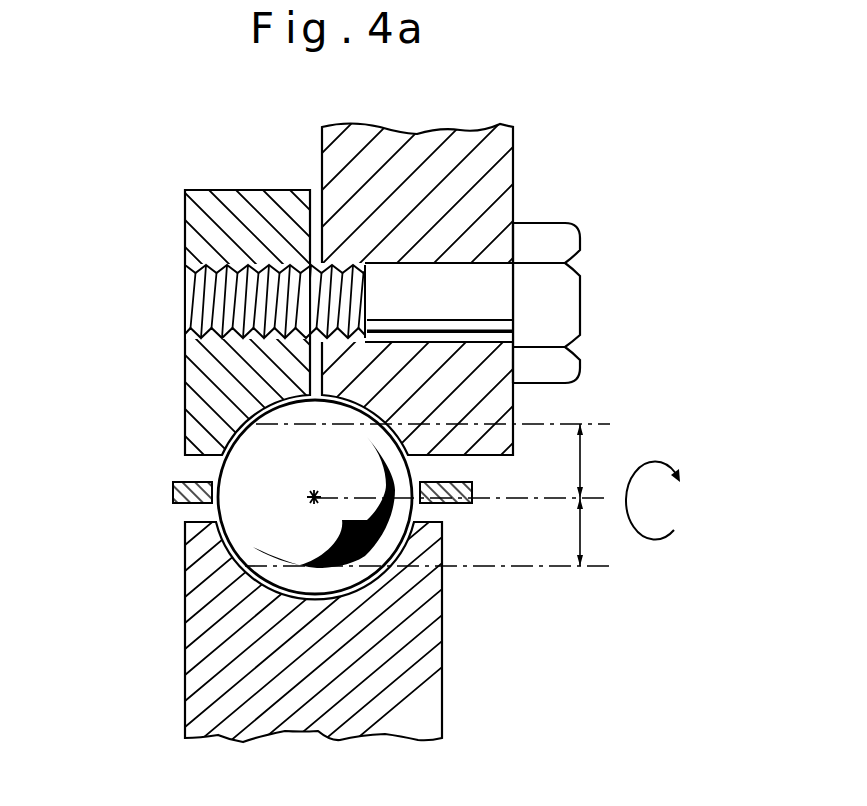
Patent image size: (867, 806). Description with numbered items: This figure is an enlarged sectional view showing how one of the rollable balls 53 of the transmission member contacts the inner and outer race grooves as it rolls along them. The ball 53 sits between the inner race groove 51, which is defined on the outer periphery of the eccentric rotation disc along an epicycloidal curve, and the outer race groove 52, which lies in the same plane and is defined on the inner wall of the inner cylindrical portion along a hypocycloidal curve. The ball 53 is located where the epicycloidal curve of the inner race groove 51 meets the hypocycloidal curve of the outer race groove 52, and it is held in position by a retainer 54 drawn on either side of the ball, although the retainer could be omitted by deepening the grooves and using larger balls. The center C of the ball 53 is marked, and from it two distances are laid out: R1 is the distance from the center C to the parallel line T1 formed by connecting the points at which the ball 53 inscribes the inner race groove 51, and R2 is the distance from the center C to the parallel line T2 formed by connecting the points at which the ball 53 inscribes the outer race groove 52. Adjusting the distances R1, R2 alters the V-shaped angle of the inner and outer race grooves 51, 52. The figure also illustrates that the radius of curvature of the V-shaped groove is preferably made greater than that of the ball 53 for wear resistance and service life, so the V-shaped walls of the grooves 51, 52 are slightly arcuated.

The inner race groove 51 is at (262, 623).
The outer race groove 52 is at (310, 392).
The rollable balls 53 is at (219, 512).
The retainer 54 is at (181, 482).
The center of the ball C is at (310, 496).
The parallel line T1 is at (250, 568).
The parallel line T2 is at (240, 402).
The distance R1 is at (577, 532).
The distance R2 is at (577, 461).